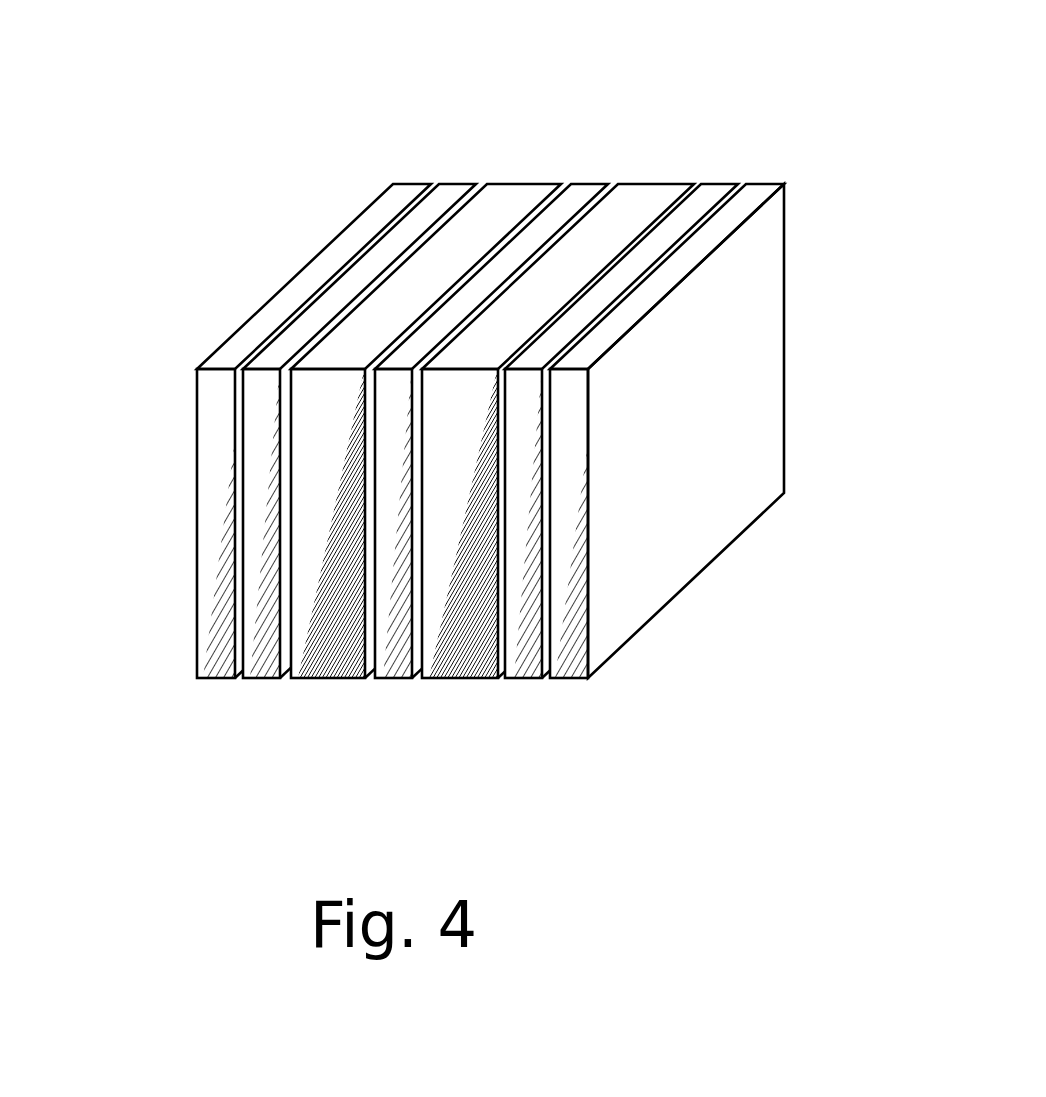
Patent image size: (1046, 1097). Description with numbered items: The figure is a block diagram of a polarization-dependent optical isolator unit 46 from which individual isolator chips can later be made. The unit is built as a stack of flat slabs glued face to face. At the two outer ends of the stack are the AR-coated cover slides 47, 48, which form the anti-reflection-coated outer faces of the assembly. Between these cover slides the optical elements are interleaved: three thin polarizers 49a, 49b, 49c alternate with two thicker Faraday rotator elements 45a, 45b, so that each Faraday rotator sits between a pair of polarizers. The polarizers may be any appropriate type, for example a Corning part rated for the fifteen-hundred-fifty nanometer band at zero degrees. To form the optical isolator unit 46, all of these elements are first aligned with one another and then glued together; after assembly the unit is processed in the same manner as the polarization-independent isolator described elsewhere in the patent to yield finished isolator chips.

The optical isolator unit 46 is at (155, 758).
The AR-coated cover slide 47 is at (193, 457).
The AR-coated cover slide 48 is at (737, 423).
The polarizer 49a is at (455, 192).
The polarizer 49b is at (582, 192).
The polarizer 49c is at (717, 190).
The Faraday rotator 45a is at (323, 643).
The Faraday rotator 45b is at (455, 643).